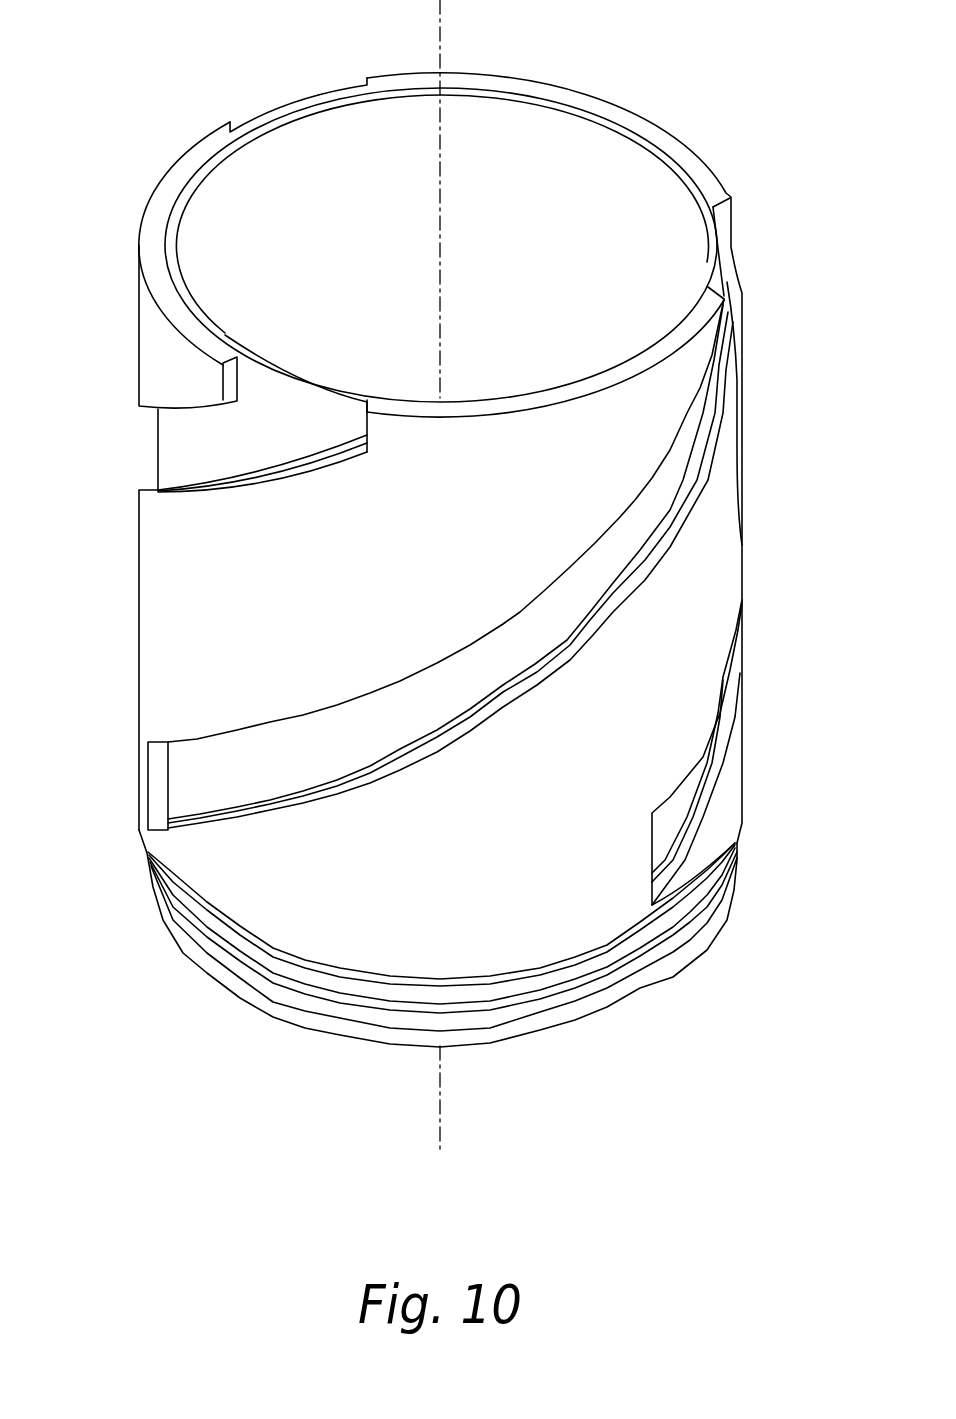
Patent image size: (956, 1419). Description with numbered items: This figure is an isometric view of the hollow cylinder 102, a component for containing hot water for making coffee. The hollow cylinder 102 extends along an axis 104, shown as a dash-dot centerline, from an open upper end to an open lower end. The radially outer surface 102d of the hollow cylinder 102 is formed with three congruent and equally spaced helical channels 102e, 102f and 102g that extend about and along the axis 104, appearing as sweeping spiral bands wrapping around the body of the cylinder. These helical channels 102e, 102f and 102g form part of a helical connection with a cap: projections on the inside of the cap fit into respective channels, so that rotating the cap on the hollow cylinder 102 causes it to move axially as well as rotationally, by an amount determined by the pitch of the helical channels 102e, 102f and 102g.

The hollow cylinder 102 is at (650, 128).
The radially outer surface 102d is at (728, 545).
The helical channel 102e is at (300, 101).
The helical channel 102f is at (193, 755).
The helical channel 102g is at (687, 787).
The axis 104 is at (440, 1100).